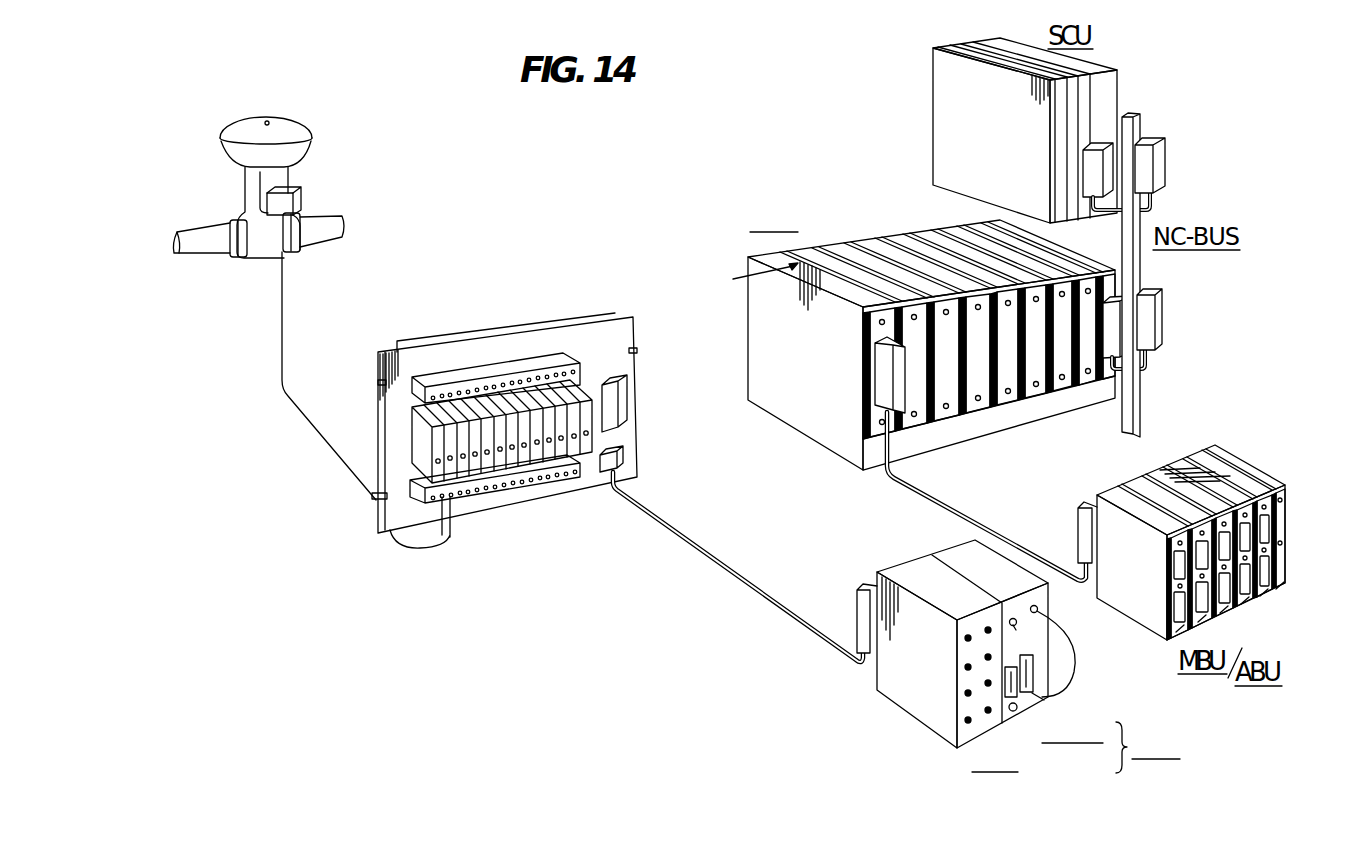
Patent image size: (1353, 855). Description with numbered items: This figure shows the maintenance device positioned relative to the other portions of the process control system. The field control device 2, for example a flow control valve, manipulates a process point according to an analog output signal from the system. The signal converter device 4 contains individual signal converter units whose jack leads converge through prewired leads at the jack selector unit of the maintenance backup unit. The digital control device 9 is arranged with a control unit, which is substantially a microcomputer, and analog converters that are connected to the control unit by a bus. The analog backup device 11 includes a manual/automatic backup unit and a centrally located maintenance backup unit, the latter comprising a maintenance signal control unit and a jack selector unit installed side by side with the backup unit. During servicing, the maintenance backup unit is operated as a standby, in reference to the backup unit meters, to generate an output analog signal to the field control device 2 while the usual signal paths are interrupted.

The field control device 2 is at (257, 119).
The signal converter device 4 is at (488, 307).
The digital control device 9 is at (917, 314).
The analog backup device 11 is at (1018, 657).